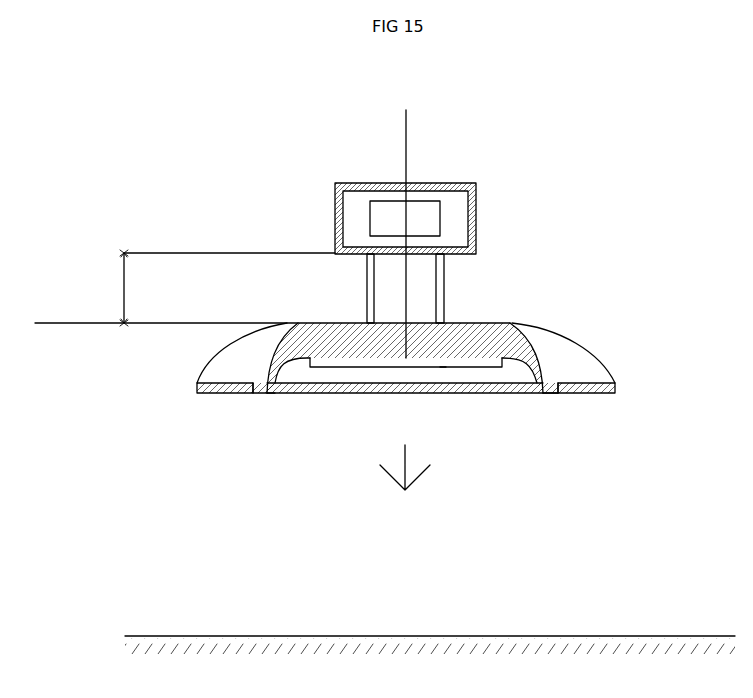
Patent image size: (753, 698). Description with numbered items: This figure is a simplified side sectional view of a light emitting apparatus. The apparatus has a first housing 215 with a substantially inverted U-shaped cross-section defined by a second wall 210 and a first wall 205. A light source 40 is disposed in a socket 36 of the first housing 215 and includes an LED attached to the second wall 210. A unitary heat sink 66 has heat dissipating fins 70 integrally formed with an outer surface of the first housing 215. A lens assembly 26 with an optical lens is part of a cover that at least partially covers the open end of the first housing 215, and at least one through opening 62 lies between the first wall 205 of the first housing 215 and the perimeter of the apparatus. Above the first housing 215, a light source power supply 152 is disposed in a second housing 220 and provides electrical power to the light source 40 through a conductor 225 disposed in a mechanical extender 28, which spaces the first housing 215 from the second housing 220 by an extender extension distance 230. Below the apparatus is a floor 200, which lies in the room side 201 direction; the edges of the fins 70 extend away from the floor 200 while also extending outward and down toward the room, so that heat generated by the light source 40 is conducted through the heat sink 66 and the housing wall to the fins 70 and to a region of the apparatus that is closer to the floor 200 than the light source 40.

The light source power supply 152 is at (428, 213).
The second housing 220 is at (335, 219).
The conductor 225 is at (405, 289).
The mechanical extender 28 is at (443, 278).
The extender extension distance 230 is at (124, 290).
The unitary heat sink 66 is at (478, 342).
The heat dissipating fins 70 is at (560, 363).
The first housing 215 is at (212, 361).
The socket 36 is at (324, 370).
The first wall 205 is at (278, 386).
The second wall 210 is at (300, 365).
The through opening 62 is at (550, 393).
The lens assembly 26 is at (470, 393).
The light source 40 is at (443, 367).
The room side direction 201 is at (405, 480).
The floor 200 is at (281, 636).